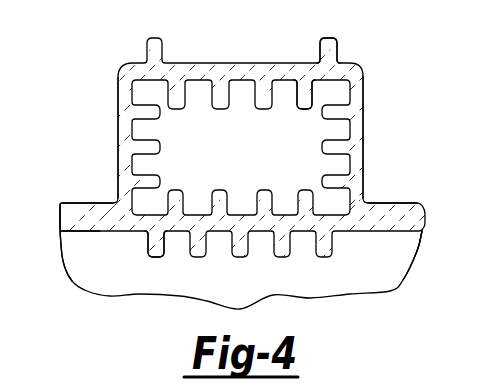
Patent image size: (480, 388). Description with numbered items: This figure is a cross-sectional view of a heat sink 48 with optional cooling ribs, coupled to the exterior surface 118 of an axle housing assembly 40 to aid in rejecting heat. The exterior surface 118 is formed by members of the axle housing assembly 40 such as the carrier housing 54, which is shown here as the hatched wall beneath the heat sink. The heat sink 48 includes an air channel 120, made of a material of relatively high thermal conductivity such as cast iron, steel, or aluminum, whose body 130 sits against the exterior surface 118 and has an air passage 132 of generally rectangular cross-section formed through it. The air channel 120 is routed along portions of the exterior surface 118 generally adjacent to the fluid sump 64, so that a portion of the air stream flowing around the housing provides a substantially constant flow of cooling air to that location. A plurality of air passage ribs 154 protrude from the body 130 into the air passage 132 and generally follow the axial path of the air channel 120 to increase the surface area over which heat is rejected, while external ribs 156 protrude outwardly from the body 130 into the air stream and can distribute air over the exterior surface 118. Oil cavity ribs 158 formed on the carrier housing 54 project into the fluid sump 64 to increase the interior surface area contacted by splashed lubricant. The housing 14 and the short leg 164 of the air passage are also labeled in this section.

The housing 14 is at (448, 267).
The axle housing assembly 40 is at (400, 195).
The heat sink 48 is at (117, 115).
The carrier housing 54 is at (67, 219).
The fluid sump 64 is at (263, 295).
The exterior surface 118 is at (85, 203).
The air channel 120 is at (117, 58).
The body 130 is at (358, 128).
The air passage 132 is at (247, 164).
The air passage ribs 154 is at (307, 111).
The external ribs 156 is at (340, 50).
The oil cavity ribs 158 is at (153, 258).
The short leg 164 is at (88, 231).